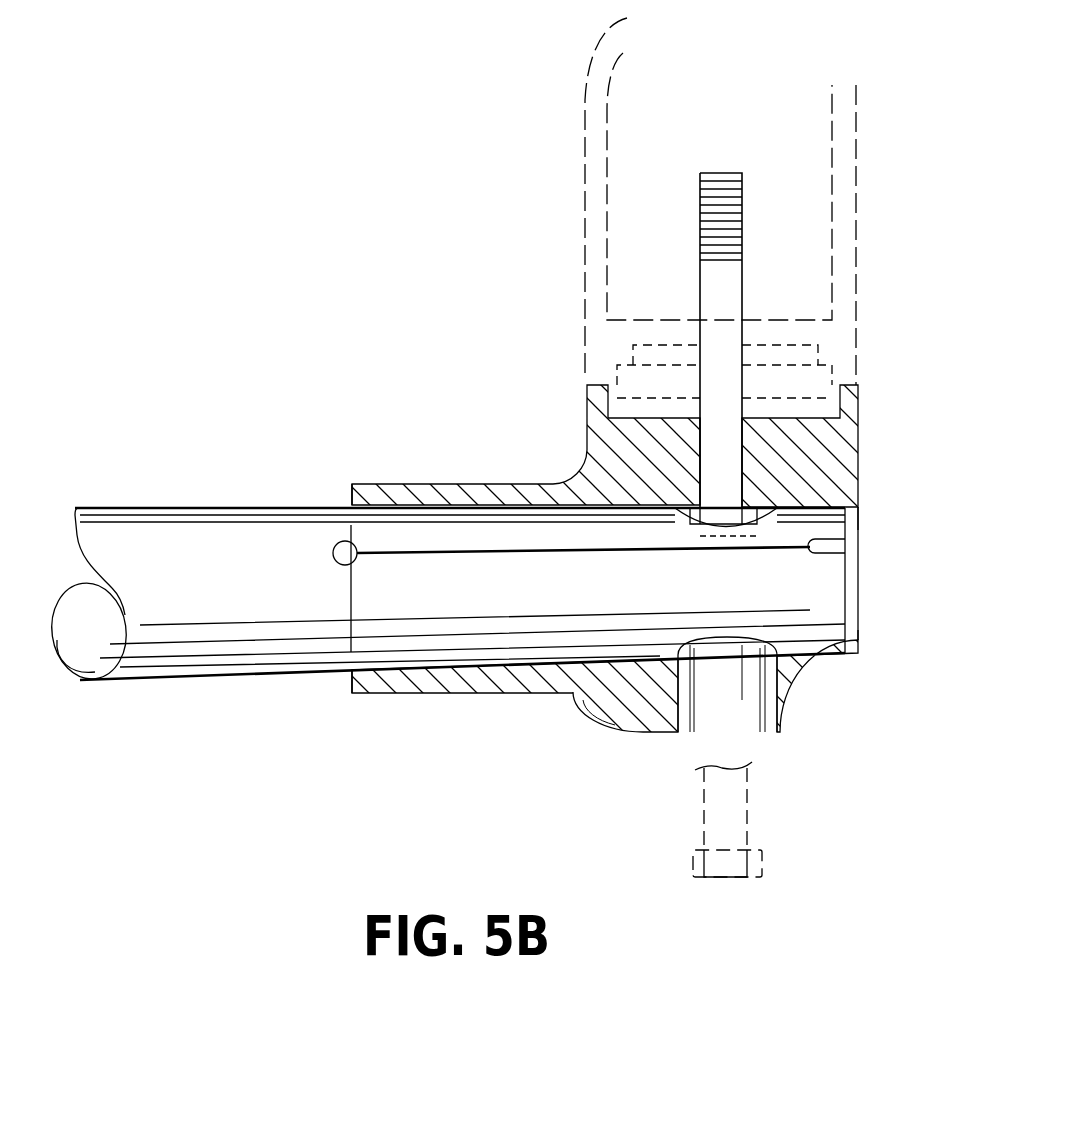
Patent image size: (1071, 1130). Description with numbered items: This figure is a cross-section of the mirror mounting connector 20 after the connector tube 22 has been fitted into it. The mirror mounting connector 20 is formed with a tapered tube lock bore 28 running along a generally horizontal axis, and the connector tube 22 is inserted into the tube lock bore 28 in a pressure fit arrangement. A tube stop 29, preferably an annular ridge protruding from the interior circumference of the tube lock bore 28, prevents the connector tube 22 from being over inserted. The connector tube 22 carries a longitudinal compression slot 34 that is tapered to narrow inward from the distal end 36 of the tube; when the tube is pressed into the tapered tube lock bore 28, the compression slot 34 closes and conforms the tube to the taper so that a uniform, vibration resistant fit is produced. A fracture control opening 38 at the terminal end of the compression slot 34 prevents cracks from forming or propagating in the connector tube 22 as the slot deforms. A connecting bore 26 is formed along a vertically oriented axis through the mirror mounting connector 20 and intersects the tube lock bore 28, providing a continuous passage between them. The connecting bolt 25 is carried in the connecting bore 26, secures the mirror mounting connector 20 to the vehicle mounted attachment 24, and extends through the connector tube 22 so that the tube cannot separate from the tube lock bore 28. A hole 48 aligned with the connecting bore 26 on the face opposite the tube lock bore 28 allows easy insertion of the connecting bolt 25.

The mirror mounting connector 20 is at (585, 428).
The connector tube 22 is at (233, 506).
The vehicle mounted attachment 24 is at (590, 287).
The connecting bolt 25 is at (700, 520).
The connecting bore 26 is at (697, 488).
The tube lock bore 28 is at (470, 498).
The tube stop 29 is at (851, 638).
The compression slot 34 is at (505, 557).
The distal end 36 is at (852, 527).
The fracture control opening 38 is at (338, 562).
The hole 48 is at (745, 700).